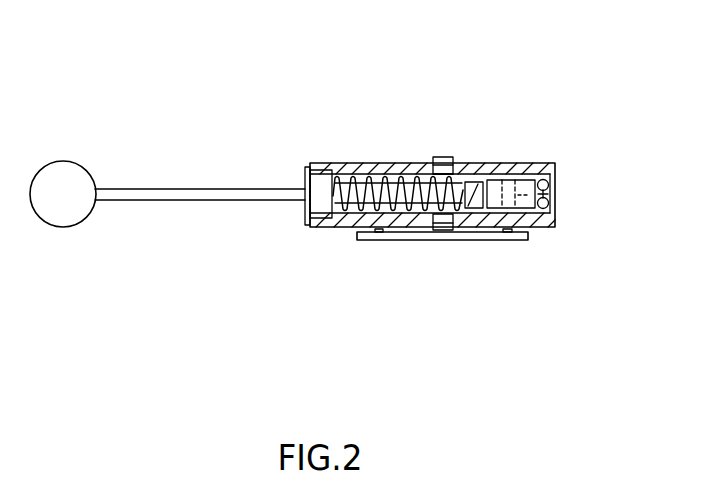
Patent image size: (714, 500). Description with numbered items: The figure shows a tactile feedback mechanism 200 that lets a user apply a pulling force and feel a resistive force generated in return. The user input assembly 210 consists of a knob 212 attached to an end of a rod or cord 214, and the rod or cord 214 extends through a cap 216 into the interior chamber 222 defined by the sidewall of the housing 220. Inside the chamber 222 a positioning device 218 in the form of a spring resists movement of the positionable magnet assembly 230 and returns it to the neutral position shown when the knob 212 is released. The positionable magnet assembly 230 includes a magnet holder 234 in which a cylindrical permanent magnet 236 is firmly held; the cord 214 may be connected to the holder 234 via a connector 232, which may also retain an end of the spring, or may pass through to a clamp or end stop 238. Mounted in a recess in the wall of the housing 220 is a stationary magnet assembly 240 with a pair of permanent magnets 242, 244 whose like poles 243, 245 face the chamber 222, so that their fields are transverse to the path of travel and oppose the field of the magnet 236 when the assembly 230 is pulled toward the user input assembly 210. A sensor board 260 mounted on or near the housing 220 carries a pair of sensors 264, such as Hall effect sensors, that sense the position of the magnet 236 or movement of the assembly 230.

The tactile feedback mechanism 200 is at (141, 87).
The user input assembly 210 is at (82, 248).
The knob 212 is at (92, 170).
The rod or cord 214 is at (158, 189).
The cap 216 is at (305, 212).
The positioning device 218 is at (358, 163).
The housing 220 is at (552, 163).
The interior chamber 222 is at (388, 178).
The positionable magnet assembly 230 is at (526, 136).
The connector 232 is at (478, 180).
The magnet holder 234 is at (532, 175).
The magnet 236 is at (560, 197).
The clamp or end stop 238 is at (550, 210).
The stationary magnet assembly 240 is at (469, 135).
The permanent magnet 242 is at (443, 158).
The pole 243 is at (428, 160).
The permanent magnet 244 is at (465, 240).
The pole 245 is at (428, 214).
The sensor board 260 is at (357, 236).
The sensors 264 is at (378, 233).